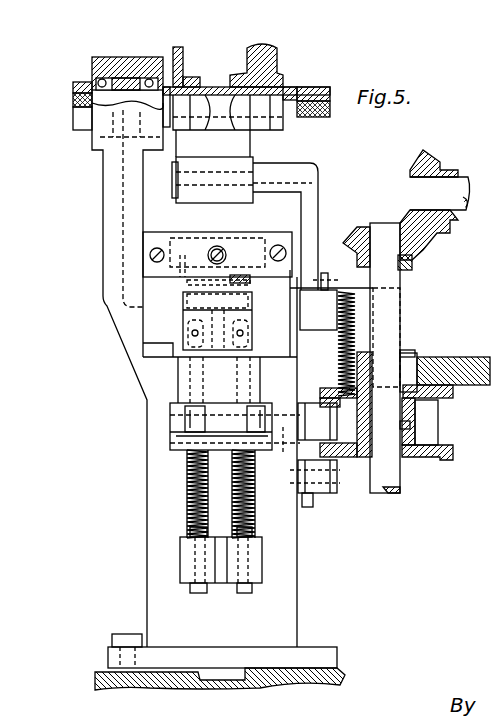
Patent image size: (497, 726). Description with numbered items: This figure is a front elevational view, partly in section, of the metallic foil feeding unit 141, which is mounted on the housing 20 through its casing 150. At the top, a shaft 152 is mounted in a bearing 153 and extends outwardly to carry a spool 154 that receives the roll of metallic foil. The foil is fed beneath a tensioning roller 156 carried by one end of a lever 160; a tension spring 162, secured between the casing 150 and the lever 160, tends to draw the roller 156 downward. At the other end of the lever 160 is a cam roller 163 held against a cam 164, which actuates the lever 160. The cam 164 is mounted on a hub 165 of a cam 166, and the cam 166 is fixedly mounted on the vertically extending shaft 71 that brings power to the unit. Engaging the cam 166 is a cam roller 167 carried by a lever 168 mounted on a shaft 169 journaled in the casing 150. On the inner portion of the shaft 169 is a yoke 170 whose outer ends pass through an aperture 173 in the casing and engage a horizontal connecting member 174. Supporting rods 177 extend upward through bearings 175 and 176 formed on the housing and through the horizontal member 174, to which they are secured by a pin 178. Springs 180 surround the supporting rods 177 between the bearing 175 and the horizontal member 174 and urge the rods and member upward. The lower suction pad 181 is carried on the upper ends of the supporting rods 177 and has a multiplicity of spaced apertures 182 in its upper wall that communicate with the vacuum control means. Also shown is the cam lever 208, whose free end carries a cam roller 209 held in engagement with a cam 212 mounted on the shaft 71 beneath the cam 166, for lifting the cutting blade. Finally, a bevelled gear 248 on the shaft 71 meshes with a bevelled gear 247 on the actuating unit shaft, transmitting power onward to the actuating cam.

The housing 20 is at (342, 663).
The vertically extending shaft 71 is at (392, 492).
The metallic foil feeding unit 141 is at (352, 207).
The casing 150 is at (290, 598).
The shaft 152 is at (126, 76).
The bearing 153 is at (100, 80).
The spool 154 is at (262, 68).
The tensioning roller 156 is at (217, 193).
The lever 160 is at (306, 212).
The tension spring 162 is at (357, 312).
The cam roller 163 is at (398, 353).
The cam 164 is at (455, 395).
The hub 165 is at (420, 357).
The cam 166 is at (442, 420).
The cam roller 167 is at (318, 390).
The lever 168 is at (300, 404).
The shaft 169 is at (281, 453).
The yoke 170 is at (170, 408).
The aperture 173 is at (172, 430).
The horizontal connecting member 174 is at (207, 488).
The bearing 175 is at (185, 553).
The bearing 176 is at (180, 372).
The supporting rods 177 is at (200, 590).
The pin 178 is at (170, 445).
The springs 180 is at (247, 507).
The lower suction pad 181 is at (190, 300).
The spaced apertures 182 is at (190, 300).
The cam lever 208 is at (304, 505).
The cam roller 209 is at (327, 491).
The cam 212 is at (441, 458).
The bevelled gear 247 is at (420, 152).
The bevelled gear 248 is at (362, 241).